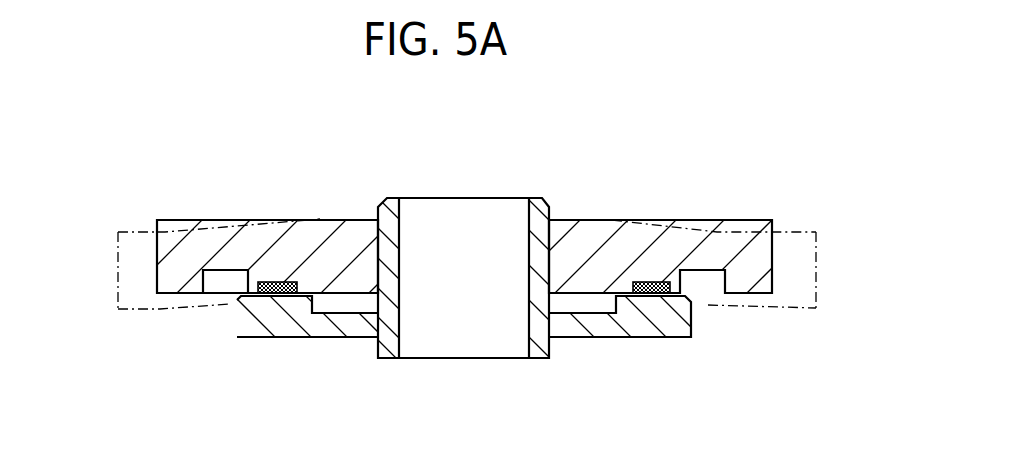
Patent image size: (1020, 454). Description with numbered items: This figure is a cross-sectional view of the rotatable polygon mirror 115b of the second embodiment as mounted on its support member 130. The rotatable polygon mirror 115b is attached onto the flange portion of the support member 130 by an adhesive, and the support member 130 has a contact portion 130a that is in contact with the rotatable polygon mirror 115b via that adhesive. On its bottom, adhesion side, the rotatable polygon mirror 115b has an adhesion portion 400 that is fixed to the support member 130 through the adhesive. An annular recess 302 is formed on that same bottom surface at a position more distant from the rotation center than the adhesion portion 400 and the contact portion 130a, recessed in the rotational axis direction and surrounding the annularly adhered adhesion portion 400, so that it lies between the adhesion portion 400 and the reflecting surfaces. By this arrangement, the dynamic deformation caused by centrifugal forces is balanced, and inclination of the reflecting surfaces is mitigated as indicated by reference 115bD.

The rotatable polygon mirror 115b is at (199, 220).
The mitigated inclination of reflecting surfaces 115bD is at (127, 232).
The support member 130 is at (348, 337).
The contact portion 130a is at (266, 295).
The annular recess 302 is at (223, 303).
The adhesion portion 400 is at (268, 296).